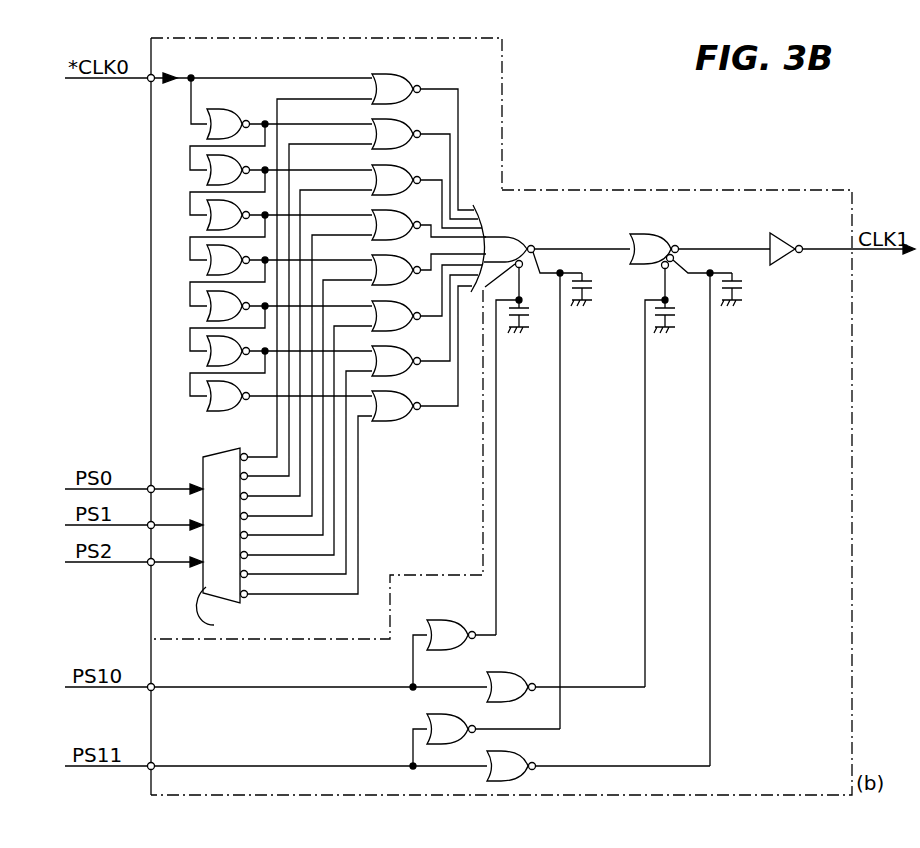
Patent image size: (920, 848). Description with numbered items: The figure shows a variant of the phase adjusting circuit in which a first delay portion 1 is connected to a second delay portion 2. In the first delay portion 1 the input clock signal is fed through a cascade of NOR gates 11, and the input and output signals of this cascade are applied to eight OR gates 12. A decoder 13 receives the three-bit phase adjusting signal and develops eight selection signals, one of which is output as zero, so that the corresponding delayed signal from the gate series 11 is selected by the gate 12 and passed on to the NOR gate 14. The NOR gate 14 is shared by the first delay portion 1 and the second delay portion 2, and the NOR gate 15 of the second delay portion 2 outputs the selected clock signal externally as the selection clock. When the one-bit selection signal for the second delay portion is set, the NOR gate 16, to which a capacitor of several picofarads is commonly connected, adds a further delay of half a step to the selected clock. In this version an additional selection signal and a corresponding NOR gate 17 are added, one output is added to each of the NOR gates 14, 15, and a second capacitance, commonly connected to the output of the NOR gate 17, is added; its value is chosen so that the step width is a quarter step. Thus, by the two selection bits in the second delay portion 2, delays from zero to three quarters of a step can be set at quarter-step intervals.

The first delay portion 1 is at (503, 105).
The second delay portion 2 is at (853, 388).
The NOR gate 11 is at (239, 388).
The OR gate 12 is at (409, 400).
The decoder 13 is at (237, 452).
The NOR gate 14 is at (511, 236).
The NOR gate 15 is at (647, 234).
The NOR gate 16 is at (511, 671).
The NOR gate 17 is at (522, 751).